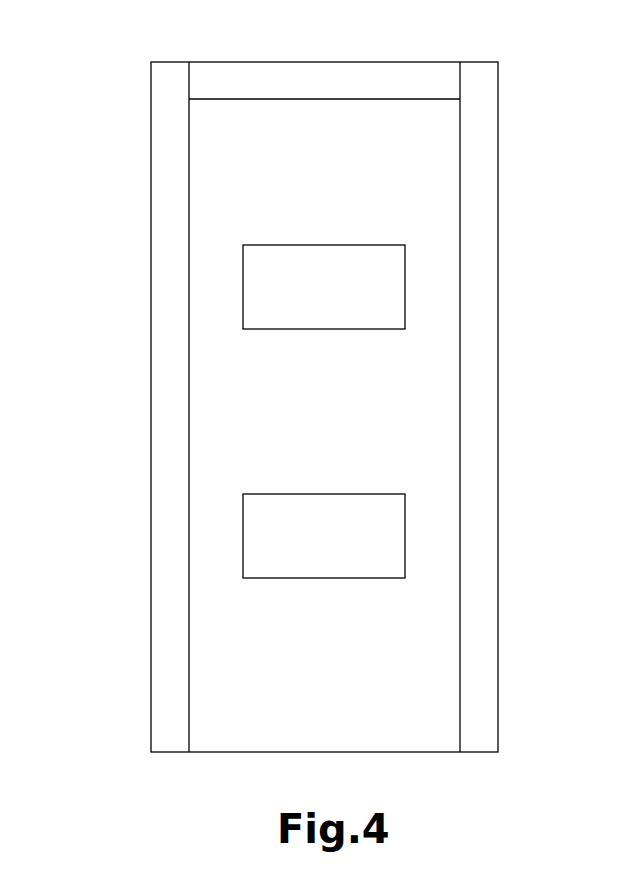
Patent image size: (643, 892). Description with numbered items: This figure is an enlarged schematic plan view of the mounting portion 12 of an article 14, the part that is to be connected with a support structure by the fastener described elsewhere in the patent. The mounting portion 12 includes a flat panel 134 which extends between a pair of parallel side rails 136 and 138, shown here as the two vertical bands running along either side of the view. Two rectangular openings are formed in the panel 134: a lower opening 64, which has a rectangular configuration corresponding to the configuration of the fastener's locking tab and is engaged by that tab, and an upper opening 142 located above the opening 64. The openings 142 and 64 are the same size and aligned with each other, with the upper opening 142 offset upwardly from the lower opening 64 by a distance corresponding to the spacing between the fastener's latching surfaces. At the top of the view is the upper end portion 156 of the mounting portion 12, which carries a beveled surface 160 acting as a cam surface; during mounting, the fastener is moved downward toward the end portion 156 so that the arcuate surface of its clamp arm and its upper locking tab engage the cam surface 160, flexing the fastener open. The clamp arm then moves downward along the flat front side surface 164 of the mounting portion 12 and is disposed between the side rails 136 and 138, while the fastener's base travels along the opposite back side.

The mounting portion 12 is at (92, 274).
The article 14 is at (92, 370).
The lower opening 64 is at (362, 557).
The flat panel 134 is at (238, 690).
The side rail 136 is at (170, 532).
The side rail 138 is at (478, 423).
The upper opening 142 is at (358, 297).
The upper end portion 156 is at (430, 155).
The beveled surface 160 is at (378, 88).
The flat front side surface 164 is at (358, 720).